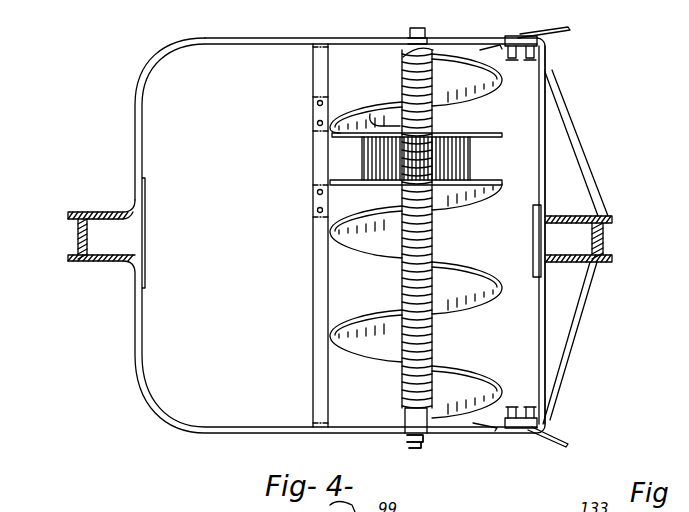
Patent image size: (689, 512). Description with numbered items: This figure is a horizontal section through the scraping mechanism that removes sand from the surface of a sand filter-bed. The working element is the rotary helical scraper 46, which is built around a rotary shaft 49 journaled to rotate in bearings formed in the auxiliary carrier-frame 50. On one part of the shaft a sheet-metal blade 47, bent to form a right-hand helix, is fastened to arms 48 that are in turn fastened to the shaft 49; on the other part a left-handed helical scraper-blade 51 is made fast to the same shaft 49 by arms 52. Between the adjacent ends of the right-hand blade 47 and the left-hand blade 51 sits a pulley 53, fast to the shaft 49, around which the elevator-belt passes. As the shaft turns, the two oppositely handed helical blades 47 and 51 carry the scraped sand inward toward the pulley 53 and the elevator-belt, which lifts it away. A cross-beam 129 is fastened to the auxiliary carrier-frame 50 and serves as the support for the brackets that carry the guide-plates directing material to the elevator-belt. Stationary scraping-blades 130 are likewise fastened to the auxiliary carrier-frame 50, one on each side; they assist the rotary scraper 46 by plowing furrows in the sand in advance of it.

The rotary helical scraper 46 is at (436, 320).
The sheet-metal blade 47 is at (378, 253).
The arms 48 is at (438, 278).
The rotary shaft 49 is at (420, 448).
The auxiliary carrier-frame 50 is at (68, 229).
The left-handed helical scraper-blade 51 is at (497, 88).
The arms 52 is at (440, 92).
The pulley 53 is at (470, 158).
The cross-beam 129 is at (318, 267).
The stationary scraping-blades 130 is at (566, 36).